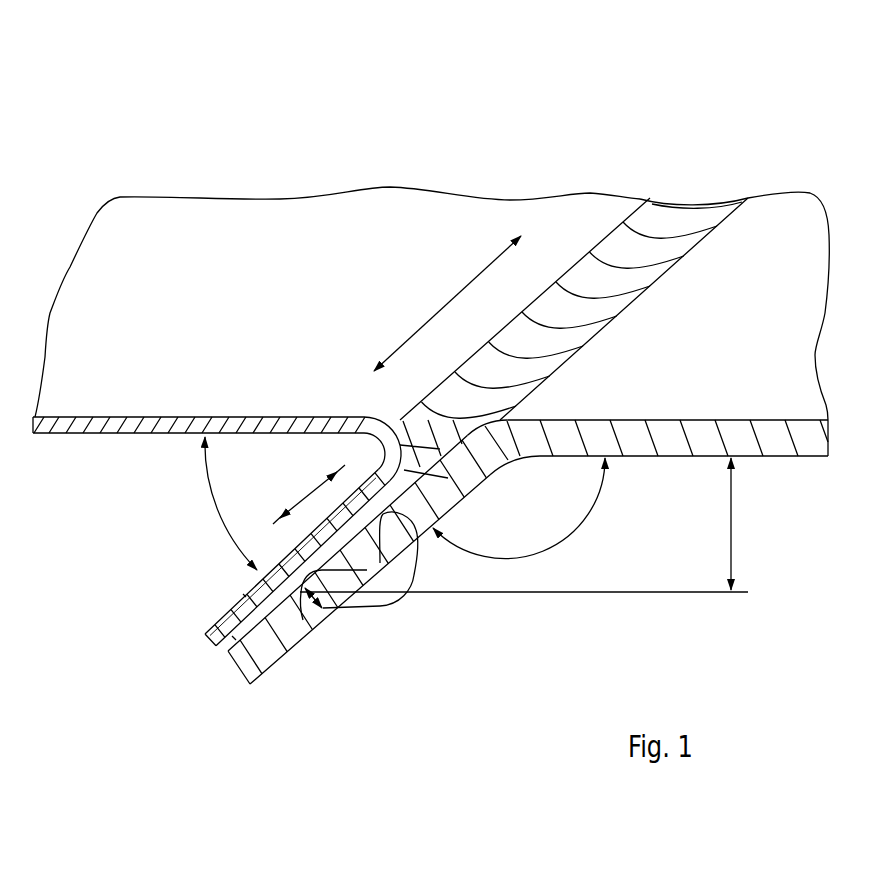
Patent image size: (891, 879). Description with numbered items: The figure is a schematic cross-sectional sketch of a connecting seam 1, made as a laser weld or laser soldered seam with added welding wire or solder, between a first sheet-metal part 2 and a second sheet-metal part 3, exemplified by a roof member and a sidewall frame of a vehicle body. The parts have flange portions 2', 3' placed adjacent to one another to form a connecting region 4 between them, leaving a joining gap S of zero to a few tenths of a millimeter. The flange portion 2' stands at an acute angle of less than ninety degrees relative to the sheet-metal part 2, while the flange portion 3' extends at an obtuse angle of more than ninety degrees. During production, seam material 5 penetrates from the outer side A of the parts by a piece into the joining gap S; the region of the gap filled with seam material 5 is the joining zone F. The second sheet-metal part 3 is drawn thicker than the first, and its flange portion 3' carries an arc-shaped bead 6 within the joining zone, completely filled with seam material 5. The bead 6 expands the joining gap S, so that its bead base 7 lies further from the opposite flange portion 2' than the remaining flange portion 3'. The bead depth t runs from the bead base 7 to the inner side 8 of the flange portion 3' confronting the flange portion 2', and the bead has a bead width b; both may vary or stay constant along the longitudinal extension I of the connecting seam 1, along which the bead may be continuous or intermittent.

The connecting seam 1 is at (688, 222).
The first sheet-metal part 2 is at (336, 263).
The second sheet-metal part 3 is at (668, 277).
The connecting region 4 is at (442, 614).
The seam material 5 is at (397, 489).
The bead 6 is at (380, 606).
The bead base 7 is at (380, 572).
The inner side of the flange portion 8 is at (243, 594).
The flange portion of the first sheet-metal part 2' is at (245, 557).
The flange portion of the second sheet-metal part 3' is at (353, 591).
The outer side A is at (281, 220).
The longitudinal extension I is at (440, 301).
The bead width b is at (310, 495).
The bead depth t is at (318, 612).
The joining gap S is at (232, 636).
The joining zone F is at (733, 521).